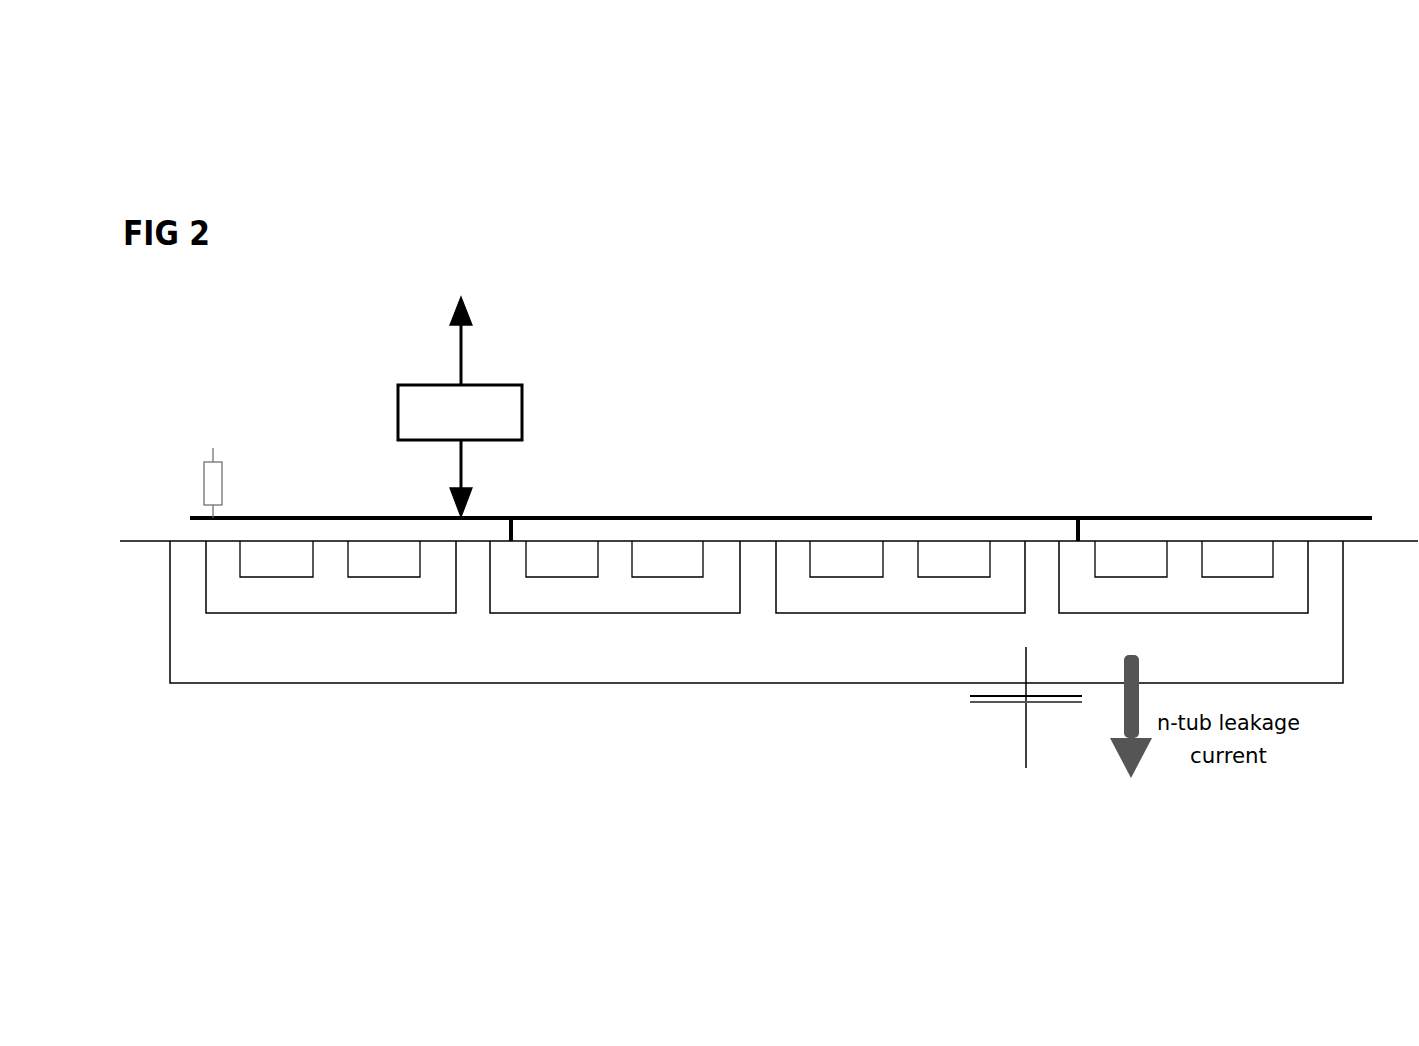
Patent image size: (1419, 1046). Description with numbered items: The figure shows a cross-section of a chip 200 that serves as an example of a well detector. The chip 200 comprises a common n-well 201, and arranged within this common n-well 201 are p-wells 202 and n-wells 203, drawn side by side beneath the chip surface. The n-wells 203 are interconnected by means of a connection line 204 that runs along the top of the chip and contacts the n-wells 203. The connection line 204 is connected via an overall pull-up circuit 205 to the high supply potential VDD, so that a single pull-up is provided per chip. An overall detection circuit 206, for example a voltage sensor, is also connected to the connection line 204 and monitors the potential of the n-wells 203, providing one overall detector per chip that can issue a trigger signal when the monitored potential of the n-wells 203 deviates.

The chip 200 is at (1302, 300).
The common n-well 201 is at (632, 678).
The p-wells 202 is at (272, 605).
The n-wells 203 is at (542, 605).
The connection line 204 is at (852, 518).
The overall pull-up circuit 205 is at (223, 478).
The overall detection circuit 206 is at (522, 413).